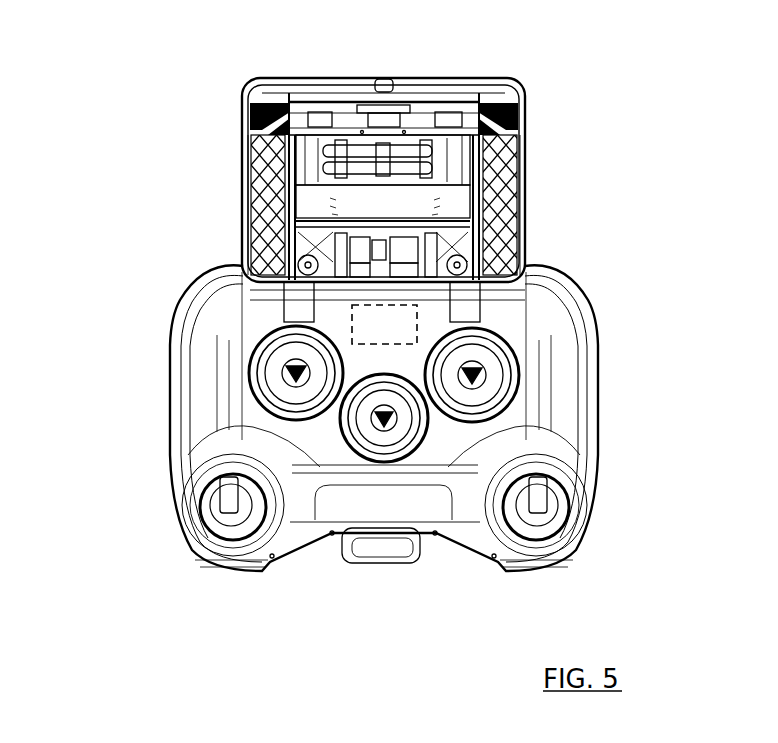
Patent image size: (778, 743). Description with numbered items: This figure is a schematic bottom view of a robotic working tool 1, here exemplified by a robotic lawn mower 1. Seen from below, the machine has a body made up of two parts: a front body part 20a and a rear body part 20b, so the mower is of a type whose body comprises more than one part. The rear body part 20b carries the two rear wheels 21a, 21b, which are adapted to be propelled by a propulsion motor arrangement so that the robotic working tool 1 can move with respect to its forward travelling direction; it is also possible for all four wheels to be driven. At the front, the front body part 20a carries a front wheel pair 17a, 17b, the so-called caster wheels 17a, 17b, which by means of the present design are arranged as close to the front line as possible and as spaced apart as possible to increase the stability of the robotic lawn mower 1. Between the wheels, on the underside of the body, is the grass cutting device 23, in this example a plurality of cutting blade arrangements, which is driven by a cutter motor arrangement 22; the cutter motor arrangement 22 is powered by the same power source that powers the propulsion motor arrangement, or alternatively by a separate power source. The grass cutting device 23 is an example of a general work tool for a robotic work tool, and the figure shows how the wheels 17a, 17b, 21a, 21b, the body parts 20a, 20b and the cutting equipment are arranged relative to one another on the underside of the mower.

The robotic working tool 1 is at (475, 63).
The front body part 20a is at (223, 283).
The rear body part 20b is at (310, 87).
The rear wheel 21a is at (512, 180).
The rear wheel 21b is at (258, 179).
The cutter motor arrangement 22 is at (420, 312).
The grass cutting device 23 is at (300, 432).
The front wheel 17a is at (538, 495).
The front wheel 17b is at (224, 496).